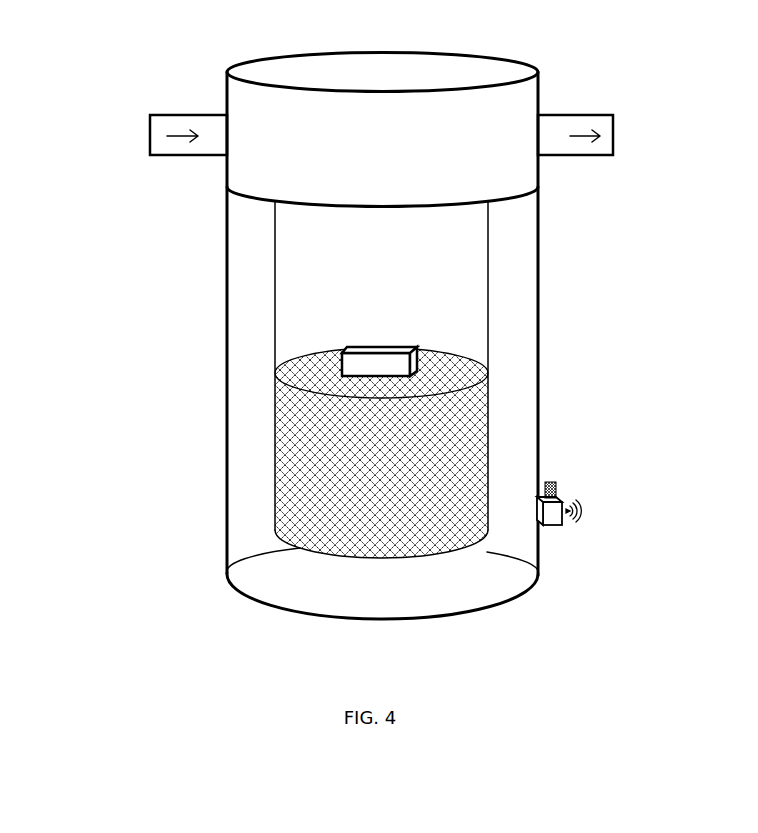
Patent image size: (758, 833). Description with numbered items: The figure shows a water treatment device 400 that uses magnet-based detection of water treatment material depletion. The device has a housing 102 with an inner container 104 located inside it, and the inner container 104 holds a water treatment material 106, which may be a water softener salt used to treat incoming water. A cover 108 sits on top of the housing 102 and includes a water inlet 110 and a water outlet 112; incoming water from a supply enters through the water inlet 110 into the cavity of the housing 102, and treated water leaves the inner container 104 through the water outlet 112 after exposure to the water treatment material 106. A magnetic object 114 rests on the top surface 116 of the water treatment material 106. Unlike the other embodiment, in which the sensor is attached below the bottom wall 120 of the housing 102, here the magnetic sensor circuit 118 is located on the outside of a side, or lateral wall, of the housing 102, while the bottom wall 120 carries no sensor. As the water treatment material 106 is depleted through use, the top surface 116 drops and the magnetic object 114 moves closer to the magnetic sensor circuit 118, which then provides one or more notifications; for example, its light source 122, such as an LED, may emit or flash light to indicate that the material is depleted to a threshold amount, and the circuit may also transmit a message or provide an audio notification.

The water treatment device 400 is at (106, 41).
The housing 102 is at (226, 238).
The inner container 104 is at (275, 307).
The water treatment material 106 is at (460, 416).
The cover 108 is at (527, 97).
The water inlet 110 is at (180, 156).
The water outlet 112 is at (598, 153).
The magnetic object 114 is at (352, 365).
The top surface 116 is at (468, 379).
The magnetic sensor circuit 118 is at (550, 517).
The bottom wall 120 is at (275, 588).
The light source 122 is at (555, 493).